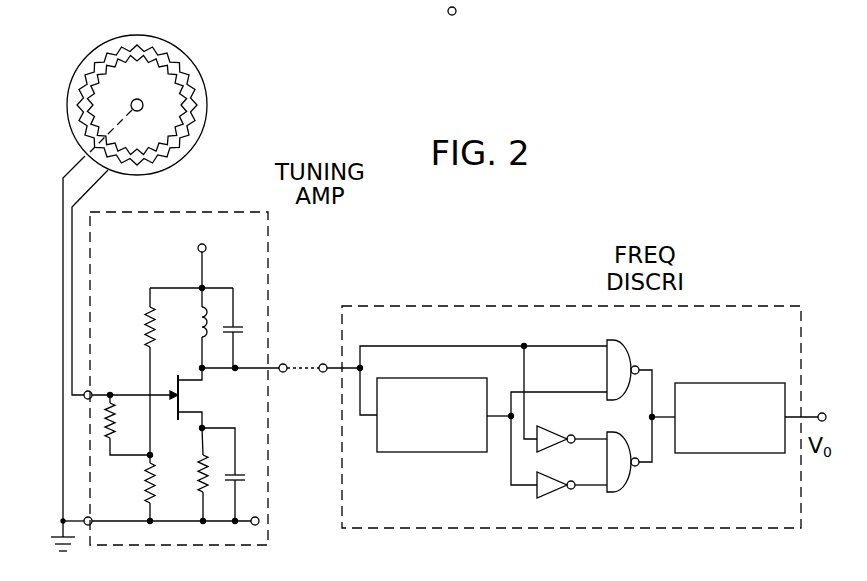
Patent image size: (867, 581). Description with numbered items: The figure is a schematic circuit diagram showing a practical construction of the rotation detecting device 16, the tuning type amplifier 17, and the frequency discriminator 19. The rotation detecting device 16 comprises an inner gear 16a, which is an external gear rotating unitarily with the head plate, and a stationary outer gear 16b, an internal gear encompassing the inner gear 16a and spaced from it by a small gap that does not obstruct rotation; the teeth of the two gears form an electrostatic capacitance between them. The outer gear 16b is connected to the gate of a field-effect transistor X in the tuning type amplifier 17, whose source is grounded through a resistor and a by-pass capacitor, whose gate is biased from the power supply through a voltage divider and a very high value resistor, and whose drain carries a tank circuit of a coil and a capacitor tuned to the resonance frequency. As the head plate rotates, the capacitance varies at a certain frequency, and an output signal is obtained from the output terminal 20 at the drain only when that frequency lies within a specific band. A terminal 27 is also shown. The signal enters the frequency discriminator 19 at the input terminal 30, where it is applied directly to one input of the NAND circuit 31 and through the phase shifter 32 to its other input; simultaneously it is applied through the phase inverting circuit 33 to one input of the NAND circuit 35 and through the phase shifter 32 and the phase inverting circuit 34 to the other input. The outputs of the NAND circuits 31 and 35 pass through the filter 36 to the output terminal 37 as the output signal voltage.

The rotation detecting device 16 is at (162, 89).
The inner gear 16a is at (162, 104).
The outer gear 16b is at (197, 95).
The tuning type amplifier 17 is at (225, 213).
The frequency discriminator 19 is at (553, 306).
The output terminal 20 is at (285, 364).
The terminal 27 is at (448, 9).
The input terminal 30 is at (322, 372).
The NAND circuit 31 is at (627, 352).
The phase shifter 32 is at (417, 452).
The phase inverting circuit 33 is at (550, 427).
The phase inverting circuit 34 is at (547, 497).
The NAND circuit 35 is at (625, 490).
The filter 36 is at (713, 383).
The output terminal 37 is at (821, 413).